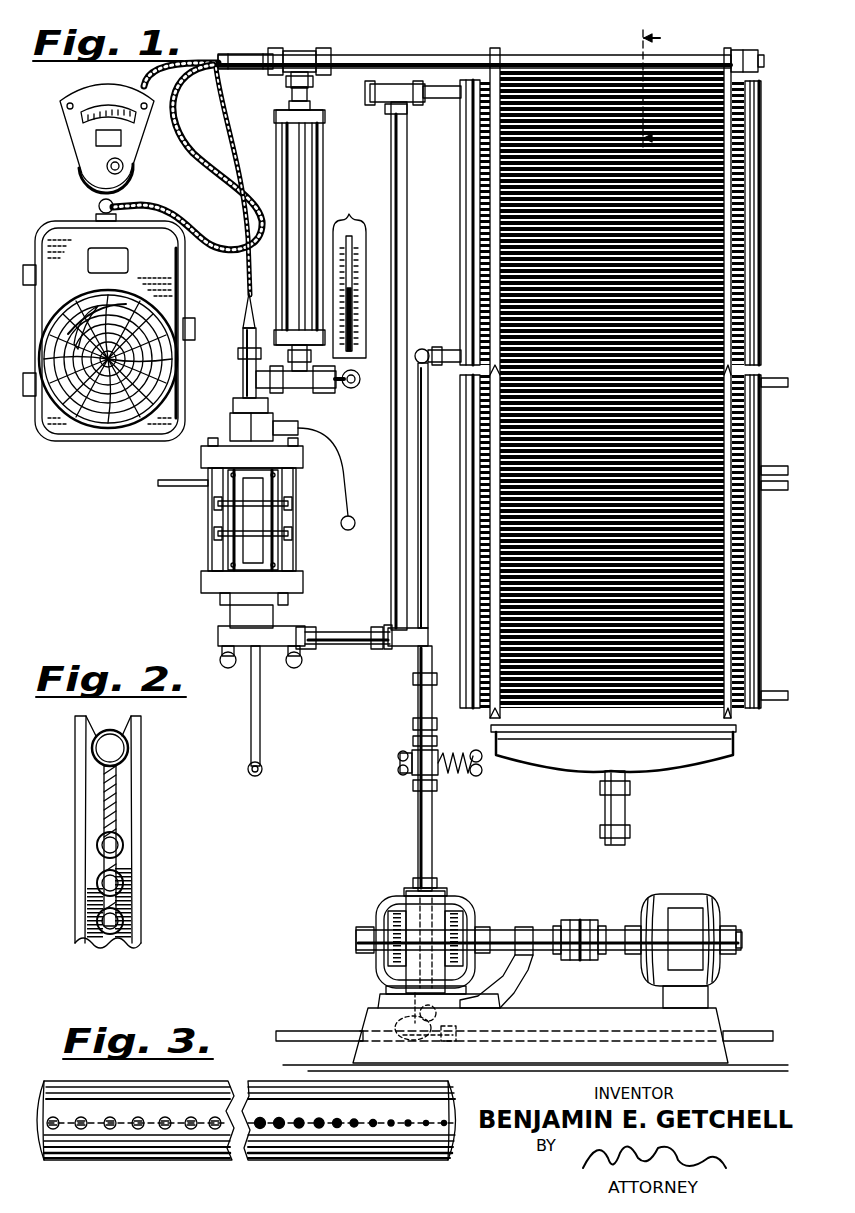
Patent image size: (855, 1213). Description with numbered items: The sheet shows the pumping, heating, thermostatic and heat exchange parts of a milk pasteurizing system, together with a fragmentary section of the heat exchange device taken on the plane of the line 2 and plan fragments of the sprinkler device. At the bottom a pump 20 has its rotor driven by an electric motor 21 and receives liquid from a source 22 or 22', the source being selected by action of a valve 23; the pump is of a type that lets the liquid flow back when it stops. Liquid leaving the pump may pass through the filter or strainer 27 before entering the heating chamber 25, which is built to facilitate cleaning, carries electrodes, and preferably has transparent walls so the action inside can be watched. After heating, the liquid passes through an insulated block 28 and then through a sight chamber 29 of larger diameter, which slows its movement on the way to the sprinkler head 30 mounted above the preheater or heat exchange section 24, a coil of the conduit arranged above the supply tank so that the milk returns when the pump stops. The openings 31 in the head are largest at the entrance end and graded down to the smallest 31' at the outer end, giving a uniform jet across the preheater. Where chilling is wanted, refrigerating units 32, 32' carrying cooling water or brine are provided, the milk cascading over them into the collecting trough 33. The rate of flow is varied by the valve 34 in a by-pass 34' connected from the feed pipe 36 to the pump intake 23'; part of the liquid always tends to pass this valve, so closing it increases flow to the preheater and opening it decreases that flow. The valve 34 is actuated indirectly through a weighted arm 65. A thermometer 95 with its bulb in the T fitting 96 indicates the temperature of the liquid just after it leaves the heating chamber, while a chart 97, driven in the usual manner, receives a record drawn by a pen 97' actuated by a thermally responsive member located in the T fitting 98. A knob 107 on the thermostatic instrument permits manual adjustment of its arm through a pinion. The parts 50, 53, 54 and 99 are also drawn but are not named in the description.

In FIG. 1, the section line 2 is at (661, 88).
In FIG. 1, the pump 20 is at (440, 893).
In FIG. 1, the electric motor 21 is at (680, 910).
In FIG. 1, the source 22 is at (535, 1027).
In FIG. 1, the source 22' is at (304, 1011).
In FIG. 1, the valve 23 is at (391, 1011).
In FIG. 1, the pump intake 23' is at (381, 988).
In FIG. 1, the preheater or heat exchange section 24 is at (693, 248).
In FIG. 2, the preheater or heat exchange section 24 is at (116, 881).
In FIG. 1, the heating chamber 25 is at (194, 512).
In FIG. 1, the filter or strainer 27 is at (213, 626).
In FIG. 1, the insulated block 28 is at (230, 422).
In FIG. 1, the sight chamber 29 is at (313, 190).
In FIG. 1, the sprinkler head 30 is at (538, 50).
In FIG. 2, the sprinkler head 30 is at (88, 746).
In FIG. 3, the sprinkler head 30 is at (180, 1142).
In FIG. 3, the openings 31 is at (130, 1155).
In FIG. 3, the smallest openings 31' is at (356, 1156).
In FIG. 1, the refrigerating unit 32 is at (762, 434).
In FIG. 1, the refrigerating unit 32' is at (760, 632).
In FIG. 1, the collecting trough 33 is at (665, 760).
In FIG. 1, the valve 34 is at (401, 779).
In FIG. 1, the by-pass 34' is at (391, 876).
In FIG. 1, the feed pipe 36 is at (421, 506).
In FIG. 1, the tube 50 is at (168, 473).
In FIG. 1, the lower flange 53 is at (198, 576).
In FIG. 1, the rod 54 is at (253, 724).
In FIG. 1, the weighted arm 65 is at (433, 768).
In FIG. 1, the thermometer 95 is at (350, 290).
In FIG. 1, the T fitting 96 is at (298, 383).
In FIG. 1, the chart 97 is at (109, 344).
In FIG. 1, the pen 97' is at (72, 297).
In FIG. 1, the T fitting 98 is at (291, 44).
In FIG. 1, the gauge 99 is at (78, 128).
In FIG. 1, the knob 107 is at (117, 161).